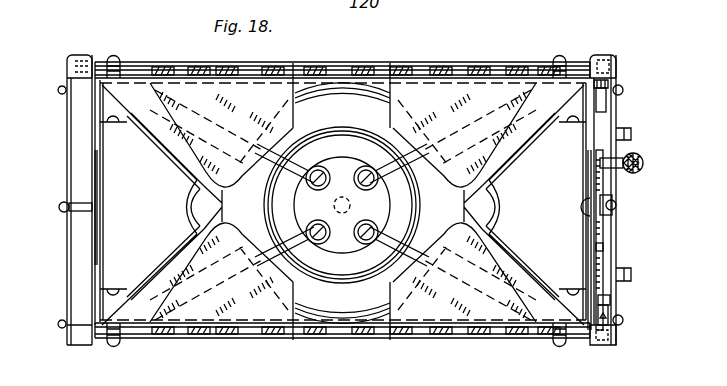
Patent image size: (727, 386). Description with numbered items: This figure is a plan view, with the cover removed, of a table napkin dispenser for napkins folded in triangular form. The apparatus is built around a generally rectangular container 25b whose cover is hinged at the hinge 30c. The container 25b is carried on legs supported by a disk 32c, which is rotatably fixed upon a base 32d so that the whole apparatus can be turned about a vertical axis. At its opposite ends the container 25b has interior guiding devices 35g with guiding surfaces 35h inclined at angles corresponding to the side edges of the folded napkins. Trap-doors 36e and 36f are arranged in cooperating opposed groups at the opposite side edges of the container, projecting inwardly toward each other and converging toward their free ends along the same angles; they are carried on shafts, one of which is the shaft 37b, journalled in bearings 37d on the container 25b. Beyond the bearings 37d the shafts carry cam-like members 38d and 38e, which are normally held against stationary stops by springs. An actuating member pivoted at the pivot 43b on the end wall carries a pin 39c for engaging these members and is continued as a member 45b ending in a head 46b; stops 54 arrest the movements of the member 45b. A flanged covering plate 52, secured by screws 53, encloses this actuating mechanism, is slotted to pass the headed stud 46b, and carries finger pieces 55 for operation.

The container 25b is at (178, 76).
The hinge 30c is at (489, 65).
The bearings 37d is at (546, 68).
The flanged covering plate 52 is at (67, 151).
The screws 53 is at (62, 211).
The guiding surfaces 35h is at (176, 163).
The interior guiding devices 35g is at (192, 207).
The trap-doors 36e is at (343, 135).
The trap-doors 36f is at (497, 260).
The base 32d is at (342, 203).
The disk 32c is at (341, 163).
The member 38e is at (606, 105).
The finger pieces 55 is at (631, 134).
The head 46b is at (643, 163).
The member 45b is at (604, 186).
The pivot 43b is at (613, 205).
The stops 54 is at (604, 248).
The pin 39c is at (610, 300).
The member 38d is at (610, 313).
The shaft 37b is at (599, 341).